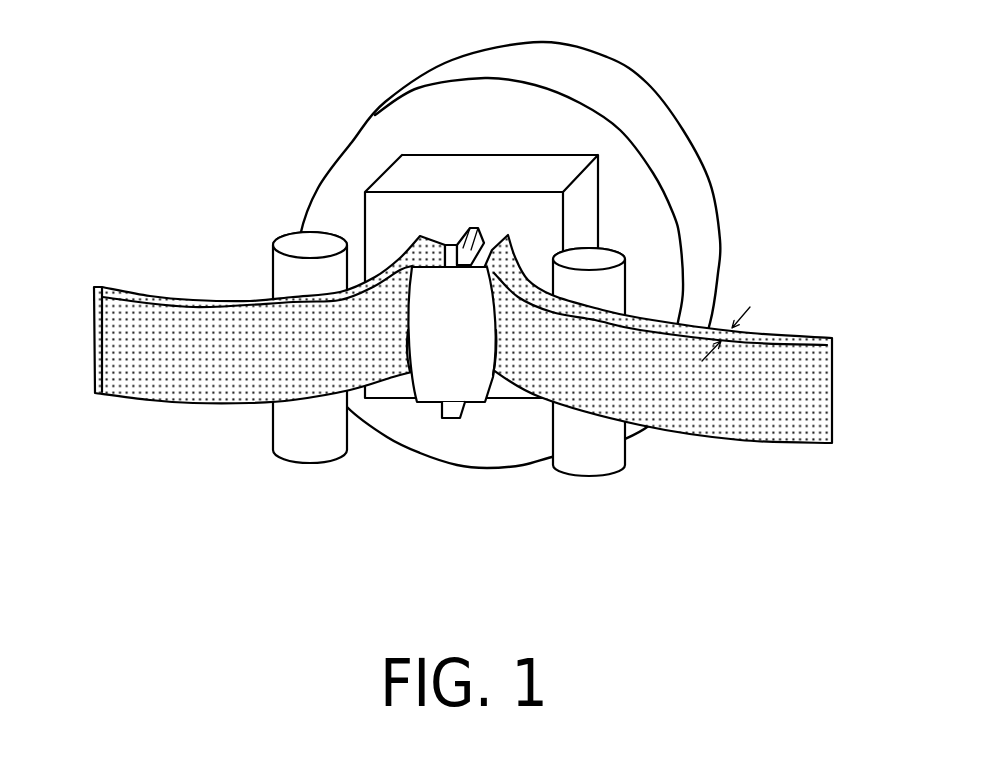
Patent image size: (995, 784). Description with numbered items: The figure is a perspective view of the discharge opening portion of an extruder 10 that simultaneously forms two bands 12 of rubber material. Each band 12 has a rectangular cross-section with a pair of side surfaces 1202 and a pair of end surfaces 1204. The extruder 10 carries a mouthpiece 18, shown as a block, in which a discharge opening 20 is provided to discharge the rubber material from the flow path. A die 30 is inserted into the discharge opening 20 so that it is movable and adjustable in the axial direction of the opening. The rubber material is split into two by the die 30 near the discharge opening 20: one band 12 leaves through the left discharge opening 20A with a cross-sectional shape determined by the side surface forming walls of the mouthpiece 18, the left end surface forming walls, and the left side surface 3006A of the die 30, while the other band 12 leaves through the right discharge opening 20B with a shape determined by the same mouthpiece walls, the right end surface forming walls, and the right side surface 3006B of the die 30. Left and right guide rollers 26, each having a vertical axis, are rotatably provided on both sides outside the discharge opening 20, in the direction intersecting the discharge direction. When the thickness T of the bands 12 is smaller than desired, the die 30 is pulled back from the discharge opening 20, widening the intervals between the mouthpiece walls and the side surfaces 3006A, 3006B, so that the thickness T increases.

The extruder 10 is at (307, 46).
The band 12 is at (464, 328).
The side surface 1202 is at (207, 375).
The end surface 1204 is at (200, 297).
The mouthpiece 18 is at (573, 160).
The discharge opening 20 is at (486, 306).
The left discharge opening 20A is at (413, 232).
The right discharge opening 20B is at (497, 233).
The guide roller 26 is at (306, 441).
The die 30 is at (470, 388).
The left side surface of the die 3006A is at (410, 323).
The right side surface of the die 3006B is at (500, 323).
The thickness T is at (732, 327).